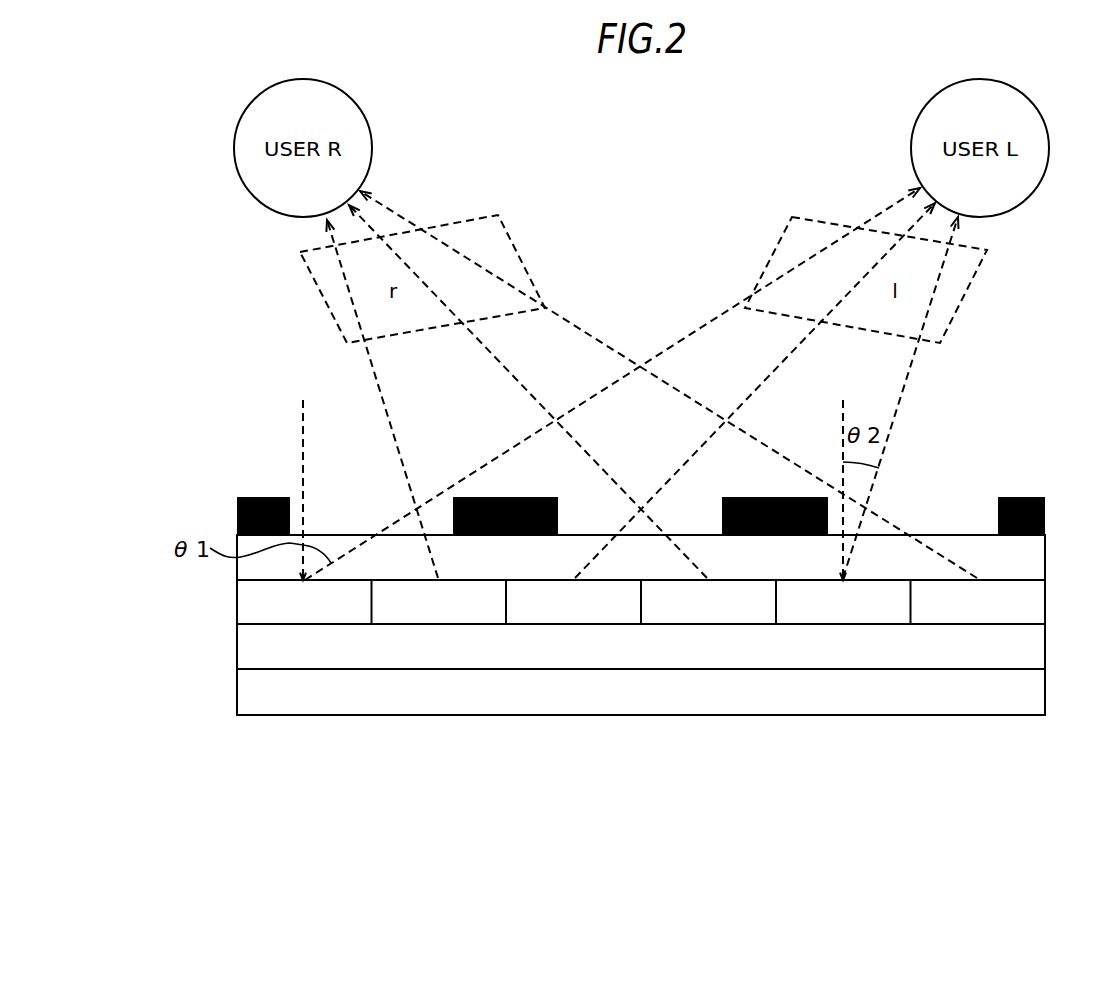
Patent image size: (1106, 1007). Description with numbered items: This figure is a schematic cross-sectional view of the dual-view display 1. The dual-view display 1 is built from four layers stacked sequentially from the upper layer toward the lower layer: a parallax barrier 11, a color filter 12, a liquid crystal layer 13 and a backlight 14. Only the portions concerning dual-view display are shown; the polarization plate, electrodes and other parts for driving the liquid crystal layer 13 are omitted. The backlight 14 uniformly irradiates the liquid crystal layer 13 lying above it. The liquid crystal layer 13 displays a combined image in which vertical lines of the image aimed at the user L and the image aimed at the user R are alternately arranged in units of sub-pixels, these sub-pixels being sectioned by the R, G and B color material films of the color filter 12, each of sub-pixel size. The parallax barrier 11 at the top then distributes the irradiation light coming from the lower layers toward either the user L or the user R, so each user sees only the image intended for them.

The dual-view display 1 is at (631, 778).
The parallax barrier 11 is at (1030, 520).
The color filter 12 is at (1048, 602).
The liquid crystal layer 13 is at (1028, 648).
The backlight 14 is at (1030, 692).